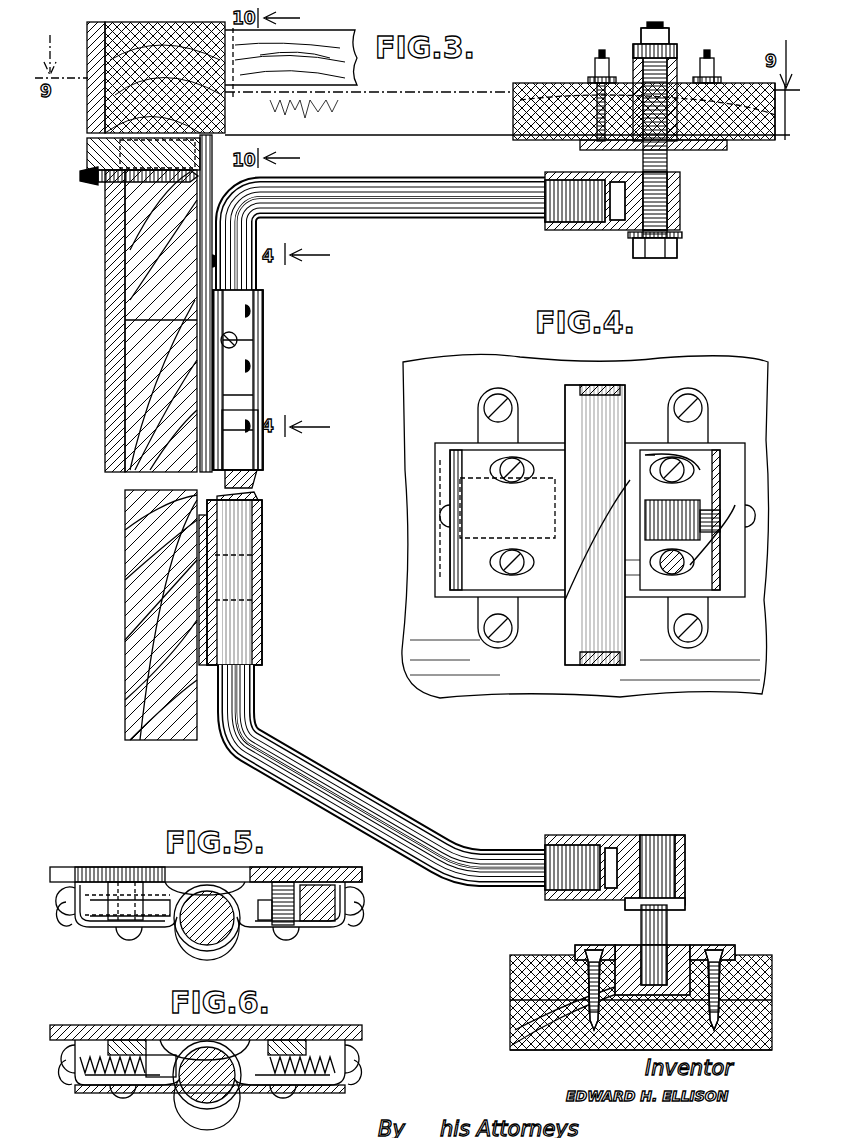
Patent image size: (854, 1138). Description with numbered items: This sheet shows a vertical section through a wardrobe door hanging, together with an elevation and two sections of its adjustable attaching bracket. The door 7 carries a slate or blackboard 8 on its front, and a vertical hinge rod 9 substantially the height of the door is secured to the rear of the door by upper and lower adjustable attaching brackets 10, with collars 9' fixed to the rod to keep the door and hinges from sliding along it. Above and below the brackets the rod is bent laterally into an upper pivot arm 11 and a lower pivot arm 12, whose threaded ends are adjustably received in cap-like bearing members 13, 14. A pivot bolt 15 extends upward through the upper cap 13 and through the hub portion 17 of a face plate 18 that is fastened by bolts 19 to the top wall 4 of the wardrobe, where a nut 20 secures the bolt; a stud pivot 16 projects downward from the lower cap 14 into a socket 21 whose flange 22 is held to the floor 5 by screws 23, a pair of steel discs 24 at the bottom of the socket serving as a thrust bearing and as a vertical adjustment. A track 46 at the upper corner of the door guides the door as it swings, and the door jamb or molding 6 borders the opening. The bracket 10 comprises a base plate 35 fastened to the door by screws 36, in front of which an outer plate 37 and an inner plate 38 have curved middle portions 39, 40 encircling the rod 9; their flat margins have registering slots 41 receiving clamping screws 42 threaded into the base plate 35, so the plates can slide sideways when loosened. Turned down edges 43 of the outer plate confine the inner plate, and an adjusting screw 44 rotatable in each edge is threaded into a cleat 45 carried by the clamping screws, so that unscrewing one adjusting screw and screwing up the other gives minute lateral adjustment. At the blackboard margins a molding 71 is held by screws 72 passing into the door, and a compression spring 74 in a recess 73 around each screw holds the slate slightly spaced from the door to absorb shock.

In FIG. 3, the top wall 4 is at (525, 88).
In FIG. 3, the floor 5 is at (523, 965).
In FIG. 4, the floor 5 is at (433, 355).
In FIG. 4, the door jamb or molding 6 is at (422, 472).
In FIG. 3, the door 7 is at (142, 600).
In FIG. 4, the door 7 is at (420, 640).
In FIG. 3, the slate or blackboard 8 is at (118, 372).
In FIG. 3, the vertical hinge rod 9 is at (253, 559).
In FIG. 4, the vertical hinge rod 9 is at (588, 519).
In FIG. 5, the vertical hinge rod 9 is at (207, 936).
In FIG. 6, the vertical hinge rod 9 is at (207, 1091).
In FIG. 3, the collar 9' is at (267, 474).
In FIG. 3, the adjustable attaching bracket 10 is at (262, 343).
In FIG. 4, the adjustable attaching bracket 10 is at (428, 584).
In FIG. 5, the adjustable attaching bracket 10 is at (298, 858).
In FIG. 6, the adjustable attaching bracket 10 is at (340, 1027).
In FIG. 3, the upper pivot arm 11 is at (404, 212).
In FIG. 3, the lower pivot arm 12 is at (358, 800).
In FIG. 3, the upper bearing cap 13 is at (680, 202).
In FIG. 3, the lower bearing cap 14 is at (684, 868).
In FIG. 3, the pivot bolt 15 is at (655, 205).
In FIG. 3, the stud pivot 16 is at (662, 930).
In FIG. 3, the hub portion 17 is at (665, 75).
In FIG. 3, the face plate 18 is at (727, 147).
In FIG. 3, the bolts 19 is at (595, 62).
In FIG. 3, the nut or lock nut 20 is at (636, 50).
In FIG. 3, the socket 21 is at (612, 1052).
In FIG. 3, the flange 22 is at (578, 950).
In FIG. 3, the screws 23 is at (716, 950).
In FIG. 3, the steel discs 24 is at (645, 965).
In FIG. 3, the base plate 35 is at (200, 320).
In FIG. 4, the base plate 35 is at (440, 446).
In FIG. 5, the base plate 35 is at (75, 875).
In FIG. 6, the base plate 35 is at (78, 1030).
In FIG. 4, the screws 36 is at (498, 400).
In FIG. 5, the outer plate 37 is at (322, 930).
In FIG. 6, the outer plate 37 is at (330, 1090).
In FIG. 5, the inner plate 38 is at (160, 912).
In FIG. 6, the inner plate 38 is at (160, 1078).
In FIG. 5, the curved middle portion of outer plate 39 is at (220, 950).
In FIG. 6, the curved middle portion of outer plate 39 is at (235, 1100).
In FIG. 5, the curved middle portion of inner plate 40 is at (190, 893).
In FIG. 6, the curved middle portion of inner plate 40 is at (188, 1050).
In FIG. 4, the registering slots 41 is at (525, 460).
In FIG. 5, the registering slots 41 is at (268, 928).
In FIG. 4, the clamping screws 42 is at (660, 458).
In FIG. 5, the clamping screws 42 is at (288, 940).
In FIG. 6, the clamping screws 42 is at (118, 1097).
In FIG. 5, the turned down edge 43 is at (72, 892).
In FIG. 6, the turned down edge 43 is at (72, 1048).
In FIG. 3, the adjusting screw 44 is at (238, 350).
In FIG. 4, the adjusting screw 44 is at (455, 520).
In FIG. 5, the adjusting screw 44 is at (62, 915).
In FIG. 6, the adjusting screw 44 is at (66, 1068).
In FIG. 4, the cleat 45 is at (590, 505).
In FIG. 5, the cleat 45 is at (115, 885).
In FIG. 6, the cleat 45 is at (122, 1042).
In FIG. 3, the track 46 is at (420, 136).
In FIG. 3, the molding 71 is at (90, 155).
In FIG. 3, the screws or holding means 72 is at (82, 177).
In FIG. 3, the recess 73 is at (118, 225).
In FIG. 3, the compression spring 74 is at (125, 165).